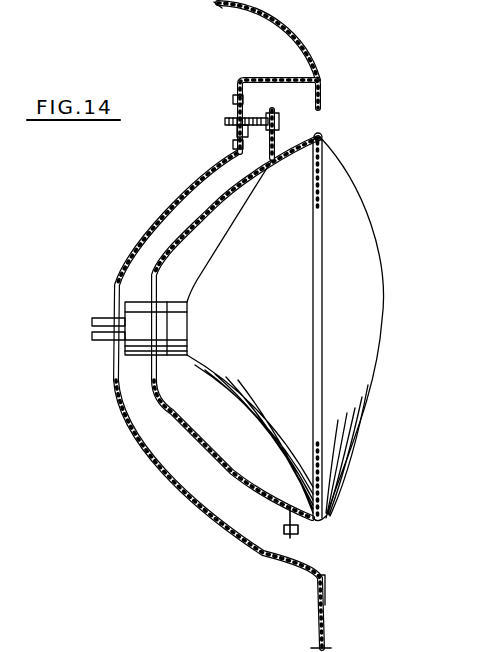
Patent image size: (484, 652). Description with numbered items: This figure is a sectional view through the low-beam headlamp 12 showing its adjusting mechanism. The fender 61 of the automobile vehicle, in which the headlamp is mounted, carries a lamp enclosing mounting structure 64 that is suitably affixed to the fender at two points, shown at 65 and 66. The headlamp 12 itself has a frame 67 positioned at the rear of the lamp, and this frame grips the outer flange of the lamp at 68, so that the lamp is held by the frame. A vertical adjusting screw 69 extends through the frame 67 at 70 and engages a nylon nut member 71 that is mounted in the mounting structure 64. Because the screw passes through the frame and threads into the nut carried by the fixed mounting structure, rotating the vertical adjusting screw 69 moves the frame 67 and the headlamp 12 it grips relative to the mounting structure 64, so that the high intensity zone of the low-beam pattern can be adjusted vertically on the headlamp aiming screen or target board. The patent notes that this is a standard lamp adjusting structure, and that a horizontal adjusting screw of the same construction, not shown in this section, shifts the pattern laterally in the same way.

The low-beam headlamp 12 is at (386, 298).
The fender 61 is at (302, 45).
The lamp enclosing mounting structure 64 is at (147, 225).
The affixing point 65 is at (325, 104).
The affixing point 66 is at (327, 589).
The frame 67 is at (217, 464).
The outer flange gripping point 68 is at (324, 138).
The vertical adjusting screw 69 is at (230, 122).
The frame passage point 70 is at (280, 138).
The nylon nut member 71 is at (236, 134).